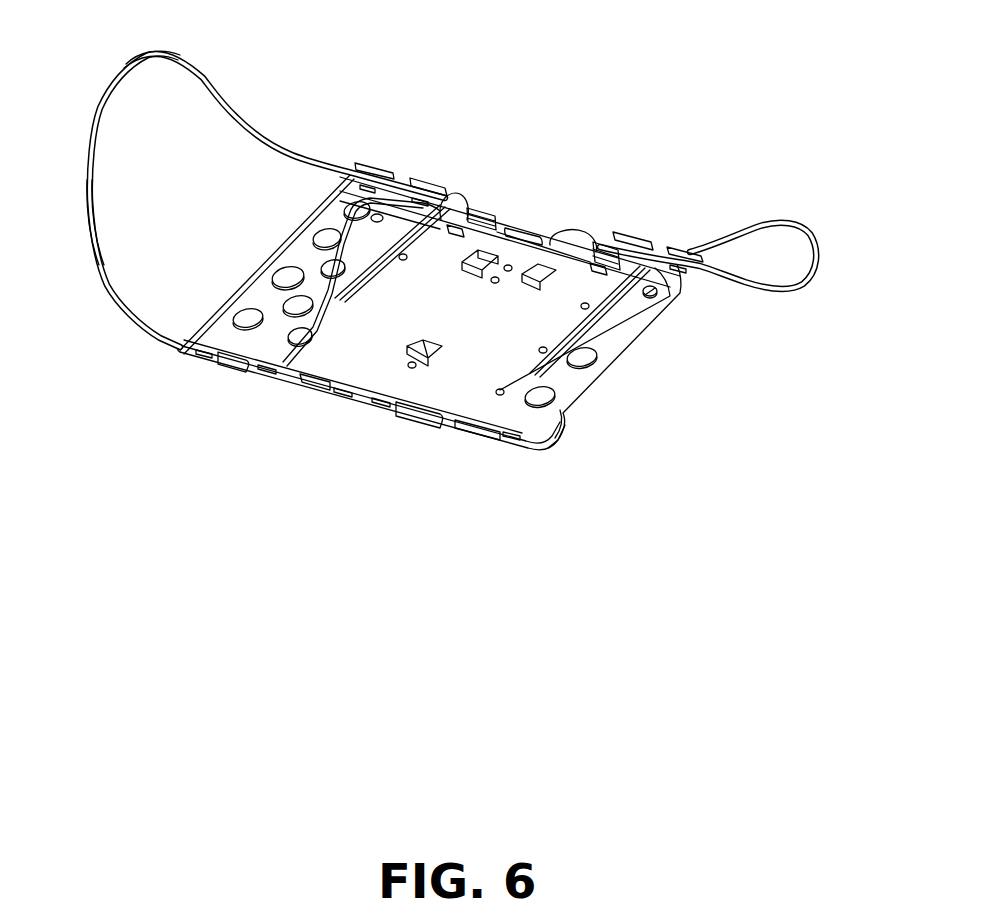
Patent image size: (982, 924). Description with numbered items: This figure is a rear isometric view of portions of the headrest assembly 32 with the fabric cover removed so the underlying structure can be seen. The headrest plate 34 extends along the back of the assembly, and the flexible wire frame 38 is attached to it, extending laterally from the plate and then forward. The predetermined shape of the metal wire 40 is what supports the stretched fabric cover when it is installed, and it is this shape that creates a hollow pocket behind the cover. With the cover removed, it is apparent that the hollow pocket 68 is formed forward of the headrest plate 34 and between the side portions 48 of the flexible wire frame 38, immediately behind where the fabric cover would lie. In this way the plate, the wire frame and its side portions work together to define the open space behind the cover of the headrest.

The headrest assembly 32 is at (705, 170).
The headrest plate 34 is at (297, 243).
The flexible wire frame 38 is at (177, 59).
The metal wire 40 is at (103, 264).
The side portions 48 is at (82, 84).
The hollow pocket 68 is at (467, 154).